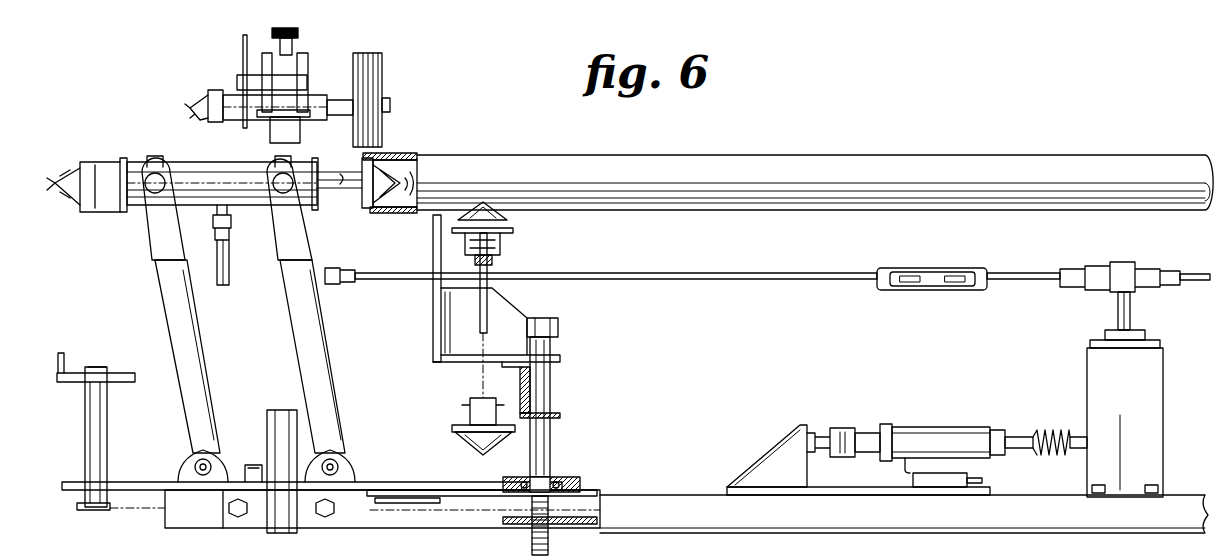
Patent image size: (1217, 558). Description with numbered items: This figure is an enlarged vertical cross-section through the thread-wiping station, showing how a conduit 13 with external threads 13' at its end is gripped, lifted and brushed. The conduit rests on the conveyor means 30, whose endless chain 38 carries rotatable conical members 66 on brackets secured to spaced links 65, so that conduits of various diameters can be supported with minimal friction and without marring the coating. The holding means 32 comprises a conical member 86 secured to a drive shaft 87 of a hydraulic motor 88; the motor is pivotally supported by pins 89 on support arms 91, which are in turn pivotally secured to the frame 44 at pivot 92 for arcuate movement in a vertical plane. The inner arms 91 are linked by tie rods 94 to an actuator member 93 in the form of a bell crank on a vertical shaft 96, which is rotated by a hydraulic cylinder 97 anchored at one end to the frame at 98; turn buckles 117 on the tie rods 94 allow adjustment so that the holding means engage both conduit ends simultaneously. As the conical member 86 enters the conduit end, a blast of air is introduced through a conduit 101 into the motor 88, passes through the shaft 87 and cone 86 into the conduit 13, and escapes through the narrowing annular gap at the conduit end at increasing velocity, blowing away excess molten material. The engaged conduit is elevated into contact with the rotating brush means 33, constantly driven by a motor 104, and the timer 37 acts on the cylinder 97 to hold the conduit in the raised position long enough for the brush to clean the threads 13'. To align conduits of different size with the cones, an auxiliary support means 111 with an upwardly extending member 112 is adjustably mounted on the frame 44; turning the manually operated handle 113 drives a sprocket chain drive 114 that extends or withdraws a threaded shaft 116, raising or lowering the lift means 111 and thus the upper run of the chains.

The conduit 13 is at (815, 162).
The external threads 13' is at (393, 199).
The holding means 32 is at (400, 155).
The conical member 86 is at (365, 204).
The drive shaft 87 is at (325, 172).
The hydraulic motor 88 is at (210, 162).
The pins 89 is at (155, 175).
The support arms 91 is at (188, 352).
The pivot 92 is at (212, 468).
The conduit 101 is at (233, 282).
The motor 104 is at (210, 92).
The rotating brush means 33 is at (392, 70).
The manually operated handle 113 is at (72, 355).
The frame 44 is at (210, 500).
The conical members 66 is at (487, 205).
The conveyor means 30 is at (528, 234).
The links 65 is at (505, 243).
The upwardly extending member 112 is at (433, 238).
The auxiliary support means 111 is at (424, 314).
The endless chain 38 is at (470, 410).
The threaded shaft 116 is at (553, 478).
The sprocket chain drive 114 is at (450, 508).
The tie rods 94 is at (742, 272).
The turn buckles 117 is at (925, 290).
The actuator member 93 is at (1118, 264).
The vertical shaft 96 is at (1118, 304).
The cylinder anchor 98 is at (812, 425).
The hydraulic cylinder 97 is at (958, 428).
The timer 37 is at (915, 478).